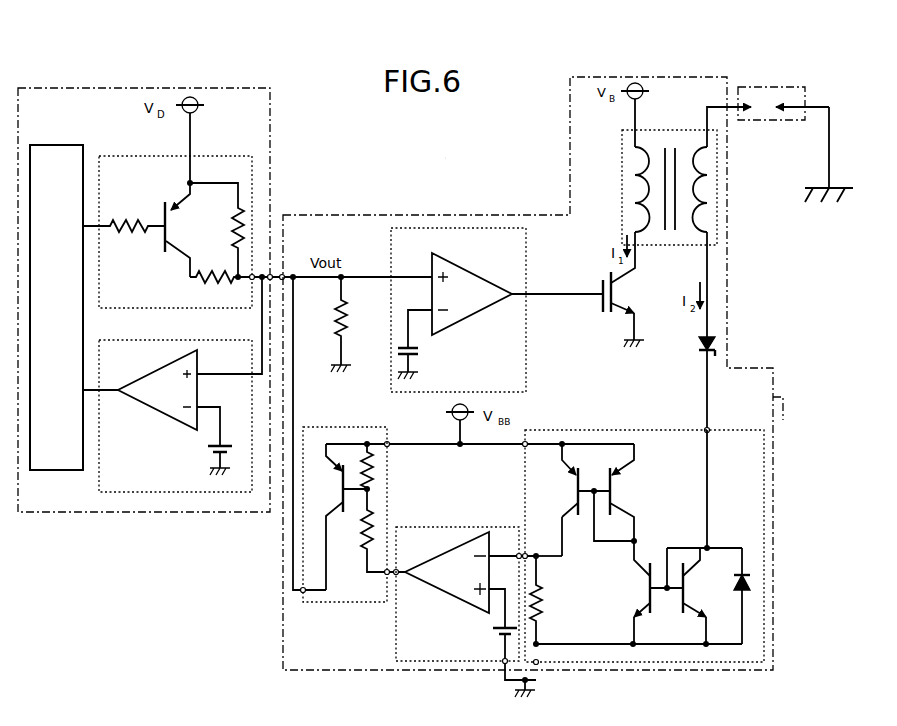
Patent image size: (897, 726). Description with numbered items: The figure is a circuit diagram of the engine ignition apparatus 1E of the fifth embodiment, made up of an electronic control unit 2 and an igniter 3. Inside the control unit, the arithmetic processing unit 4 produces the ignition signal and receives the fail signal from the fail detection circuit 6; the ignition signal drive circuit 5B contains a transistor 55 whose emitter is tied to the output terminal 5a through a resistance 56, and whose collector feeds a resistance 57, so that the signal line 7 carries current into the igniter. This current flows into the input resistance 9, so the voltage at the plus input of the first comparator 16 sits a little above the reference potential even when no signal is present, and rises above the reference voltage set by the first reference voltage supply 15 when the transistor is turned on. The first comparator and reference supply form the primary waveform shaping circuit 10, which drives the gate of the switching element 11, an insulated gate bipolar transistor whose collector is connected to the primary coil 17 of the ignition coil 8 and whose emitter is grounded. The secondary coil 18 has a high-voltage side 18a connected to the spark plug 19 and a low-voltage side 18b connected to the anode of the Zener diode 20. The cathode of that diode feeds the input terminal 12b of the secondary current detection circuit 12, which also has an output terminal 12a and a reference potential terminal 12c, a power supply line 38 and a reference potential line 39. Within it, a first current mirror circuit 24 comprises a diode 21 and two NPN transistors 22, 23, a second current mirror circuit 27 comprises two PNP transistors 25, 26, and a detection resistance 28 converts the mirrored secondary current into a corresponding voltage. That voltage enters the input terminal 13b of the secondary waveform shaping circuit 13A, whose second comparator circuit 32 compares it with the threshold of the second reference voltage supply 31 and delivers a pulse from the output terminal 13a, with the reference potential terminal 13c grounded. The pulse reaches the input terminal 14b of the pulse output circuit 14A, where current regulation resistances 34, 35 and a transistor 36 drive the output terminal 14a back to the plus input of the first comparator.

The engine ignition apparatus 1E is at (445, 158).
The electronic control unit 2 is at (278, 118).
The igniter 3 is at (784, 422).
The arithmetic processing unit 4 is at (48, 472).
The ignition signal drive circuit 5B is at (258, 158).
The output terminal 5a is at (252, 282).
The fail detection circuit 6 is at (132, 494).
The signal line 7 is at (284, 275).
The ignition coil 8 is at (620, 165).
The input resistance 9 is at (348, 325).
The primary waveform shaping circuit 10 is at (430, 226).
The switching element 11 is at (620, 319).
The secondary current detection circuit 12 is at (766, 465).
The output terminal 12a is at (525, 553).
The input terminal 12b is at (704, 430).
The reference potential terminal 12c is at (540, 665).
The secondary waveform shaping circuit 13A is at (390, 650).
The output terminal 13a is at (395, 575).
The input terminal 13b is at (519, 553).
The reference potential terminal 13c is at (505, 664).
The pulse output circuit 14A is at (375, 428).
The output terminal 14a is at (300, 592).
The input terminal 14b is at (385, 574).
The first reference voltage supply 15 is at (398, 348).
The first comparator 16 is at (470, 268).
The primary coil 17 is at (633, 203).
The secondary coil 18 is at (705, 200).
The high-voltage side 18a is at (708, 120).
The low-voltage side 18b is at (712, 250).
The spark plug 19 is at (760, 121).
The Zener diode 20 is at (716, 345).
The diode 21 is at (753, 583).
The transistor 22 is at (710, 555).
The transistor 23 is at (635, 590).
The first current mirror circuit 24 is at (655, 565).
The transistor 25 is at (625, 492).
The transistor 26 is at (572, 488).
The second current mirror circuit 27 is at (580, 525).
The detection resistance 28 is at (543, 585).
The second reference voltage supply 31 is at (495, 630).
The second comparator circuit 32 is at (423, 582).
The current regulation resistance 34 is at (375, 515).
The current regulation resistance 35 is at (375, 462).
The transistor 36 is at (331, 497).
The power supply line 38 is at (582, 443).
The reference potential line 39 is at (672, 648).
The transistor 55 is at (186, 222).
The resistance 56 is at (245, 212).
The resistance 57 is at (210, 290).